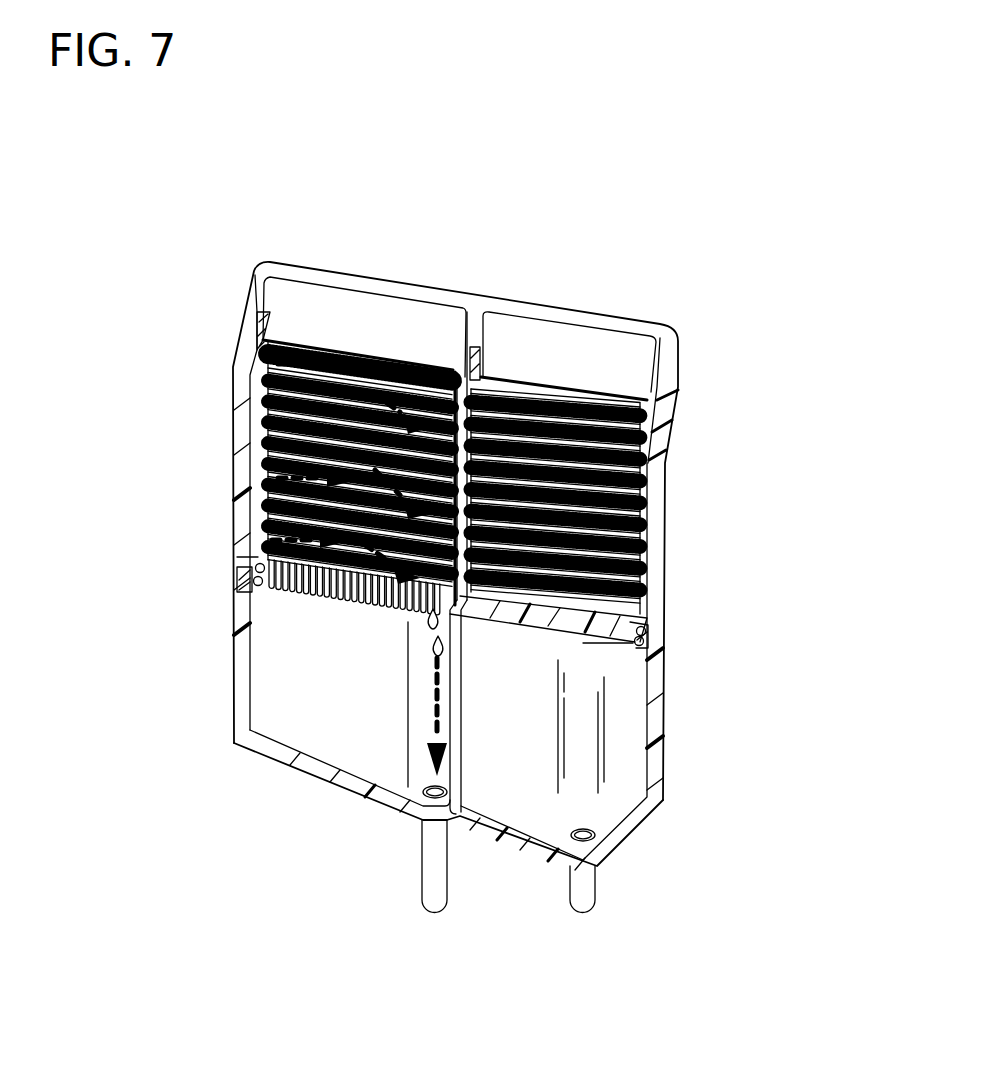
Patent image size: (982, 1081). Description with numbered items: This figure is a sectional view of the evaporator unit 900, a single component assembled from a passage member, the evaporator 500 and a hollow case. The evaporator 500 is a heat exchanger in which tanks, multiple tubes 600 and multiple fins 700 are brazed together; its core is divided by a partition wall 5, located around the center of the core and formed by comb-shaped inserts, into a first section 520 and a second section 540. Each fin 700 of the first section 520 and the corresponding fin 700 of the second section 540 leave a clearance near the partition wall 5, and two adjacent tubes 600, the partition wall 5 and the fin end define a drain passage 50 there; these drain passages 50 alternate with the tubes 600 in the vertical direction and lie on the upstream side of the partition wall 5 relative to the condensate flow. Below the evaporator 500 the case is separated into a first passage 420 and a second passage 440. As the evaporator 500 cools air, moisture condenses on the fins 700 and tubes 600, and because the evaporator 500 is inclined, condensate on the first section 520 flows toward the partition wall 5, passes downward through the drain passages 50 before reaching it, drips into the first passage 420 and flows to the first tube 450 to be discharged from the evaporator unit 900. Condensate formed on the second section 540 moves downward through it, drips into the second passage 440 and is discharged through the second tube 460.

The evaporator unit 900 is at (689, 400).
The partition wall 5 is at (545, 447).
The evaporator 500 is at (678, 516).
The tubes 600 is at (270, 542).
The fins 700 is at (268, 556).
The first section 520 is at (244, 577).
The drain passage 50 is at (430, 610).
The first passage 420 is at (313, 746).
The second passage 440 is at (610, 747).
The second section 540 is at (654, 644).
The first tube 450 is at (420, 879).
The second tube 460 is at (597, 898).